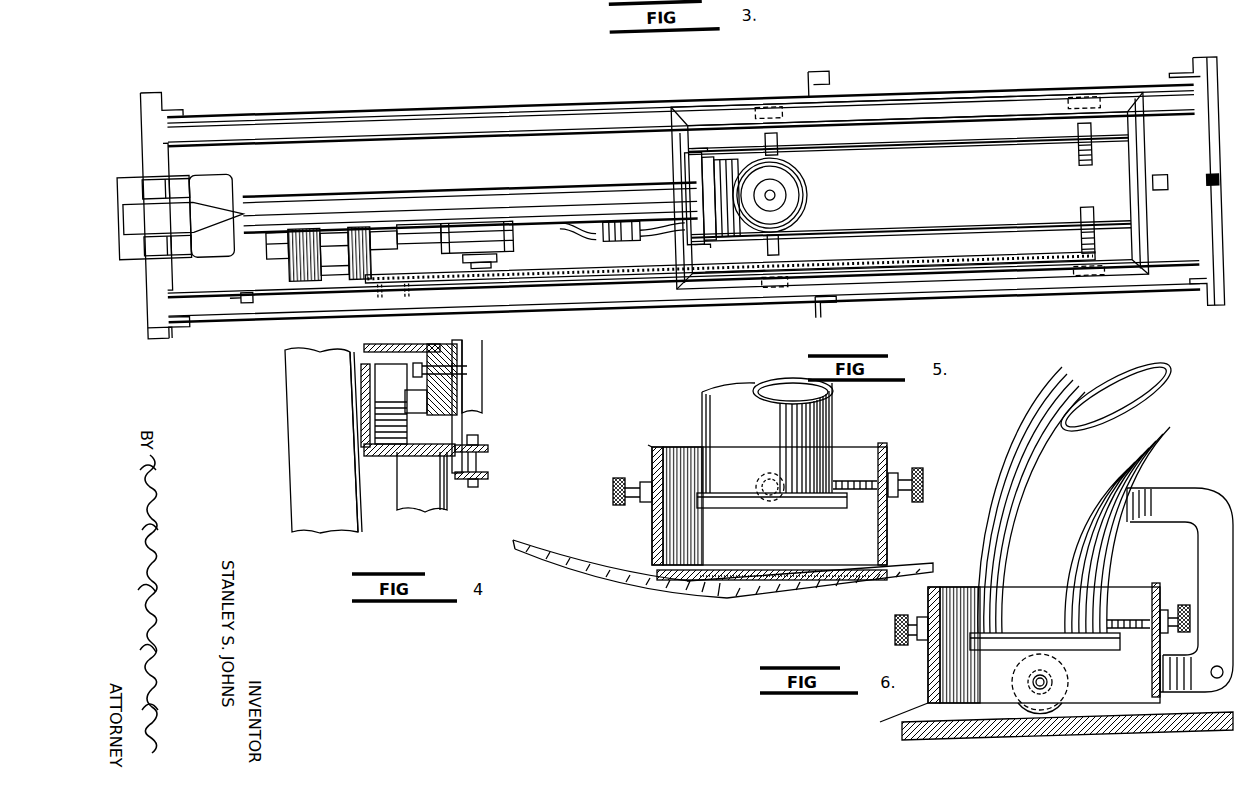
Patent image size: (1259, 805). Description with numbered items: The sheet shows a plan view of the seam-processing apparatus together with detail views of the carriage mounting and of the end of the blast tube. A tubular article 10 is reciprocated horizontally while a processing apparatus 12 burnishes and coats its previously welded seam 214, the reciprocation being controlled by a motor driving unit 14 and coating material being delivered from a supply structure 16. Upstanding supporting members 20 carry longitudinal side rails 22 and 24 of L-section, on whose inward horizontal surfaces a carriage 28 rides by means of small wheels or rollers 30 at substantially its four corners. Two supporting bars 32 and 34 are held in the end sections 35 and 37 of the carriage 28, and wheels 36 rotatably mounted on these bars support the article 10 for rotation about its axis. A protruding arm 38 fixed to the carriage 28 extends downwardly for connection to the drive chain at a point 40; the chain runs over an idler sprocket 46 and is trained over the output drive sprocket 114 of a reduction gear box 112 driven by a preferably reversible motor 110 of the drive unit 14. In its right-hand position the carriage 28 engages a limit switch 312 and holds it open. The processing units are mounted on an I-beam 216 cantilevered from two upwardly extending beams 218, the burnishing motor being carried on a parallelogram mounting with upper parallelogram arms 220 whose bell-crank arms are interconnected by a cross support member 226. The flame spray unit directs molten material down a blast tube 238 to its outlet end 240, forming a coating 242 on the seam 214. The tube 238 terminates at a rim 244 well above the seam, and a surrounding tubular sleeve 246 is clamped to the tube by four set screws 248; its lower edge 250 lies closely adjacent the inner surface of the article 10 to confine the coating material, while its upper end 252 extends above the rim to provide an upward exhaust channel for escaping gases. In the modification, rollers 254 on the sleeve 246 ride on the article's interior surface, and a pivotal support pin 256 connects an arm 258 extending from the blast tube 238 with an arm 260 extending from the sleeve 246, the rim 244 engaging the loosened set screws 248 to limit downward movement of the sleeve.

In FIG. 5, the tubular article 10 is at (560, 560).
In FIG. 6, the tubular article 10 is at (935, 740).
In FIG. 3, the processing apparatus 12 is at (824, 207).
In FIG. 3, the motor driving unit 14 is at (400, 269).
In FIG. 3, the supply structure 16 is at (190, 215).
In FIG. 3, the upstanding supporting members 20 is at (162, 103).
In FIG. 4, the upstanding supporting members 20 is at (296, 476).
In FIG. 3, the longitudinal side rail 22 is at (448, 117).
In FIG. 3, the longitudinal side rail 24 is at (528, 313).
In FIG. 4, the longitudinal side rail 24 is at (350, 405).
In FIG. 3, the carriage 28 is at (920, 118).
In FIG. 4, the carriage 28 is at (425, 453).
In FIG. 3, the wheels or rollers 30 is at (758, 127).
In FIG. 4, the wheels or rollers 30 is at (405, 445).
In FIG. 3, the supporting bar 32 is at (934, 172).
In FIG. 3, the supporting bar 34 is at (960, 254).
In FIG. 3, the end section of carriage 35 is at (1143, 160).
In FIG. 3, the wheels 36 is at (777, 160).
In FIG. 3, the end section of carriage 37 is at (671, 163).
In FIG. 4, the protruding arm 38 is at (464, 428).
In FIG. 3, the connection point 40 is at (760, 292).
In FIG. 4, the connection point 40 is at (488, 462).
In FIG. 3, the idler sprocket 46 is at (372, 293).
In FIG. 3, the motor 110 is at (284, 272).
In FIG. 3, the reduction gear box 112 is at (509, 255).
In FIG. 3, the output drive sprocket 114 is at (492, 276).
In FIG. 5, the welded seam 214 is at (780, 590).
In FIG. 3, the I-beam 216 is at (395, 200).
In FIG. 3, the upwardly extending beams 218 is at (172, 177).
In FIG. 3, the upper parallelogram arms 220 is at (712, 172).
In FIG. 3, the cross support member 226 is at (634, 257).
In FIG. 3, the blast tube 238 is at (640, 236).
In FIG. 5, the blast tube 238 is at (832, 412).
In FIG. 6, the blast tube 238 is at (1160, 440).
In FIG. 5, the outlet end of blast tube 240 is at (934, 493).
In FIG. 6, the outlet end of blast tube 240 is at (1132, 566).
In FIG. 5, the coating 242 is at (698, 580).
In FIG. 5, the rim 244 is at (847, 509).
In FIG. 6, the rim 244 is at (1092, 650).
In FIG. 5, the tubular sleeve 246 is at (887, 535).
In FIG. 6, the tubular sleeve 246 is at (1150, 587).
In FIG. 5, the set screws 248 is at (612, 484).
In FIG. 6, the set screws 248 is at (1184, 605).
In FIG. 5, the lower edge of sleeve 250 is at (663, 540).
In FIG. 6, the lower edge of sleeve 250 is at (928, 703).
In FIG. 5, the upper end of sleeve 252 is at (648, 445).
In FIG. 6, the rollers 254 is at (1062, 705).
In FIG. 6, the pivotal support pin 256 is at (1210, 680).
In FIG. 6, the arm 258 is at (1172, 488).
In FIG. 6, the arm 260 is at (1165, 656).
In FIG. 3, the limit switch 312 is at (1203, 208).